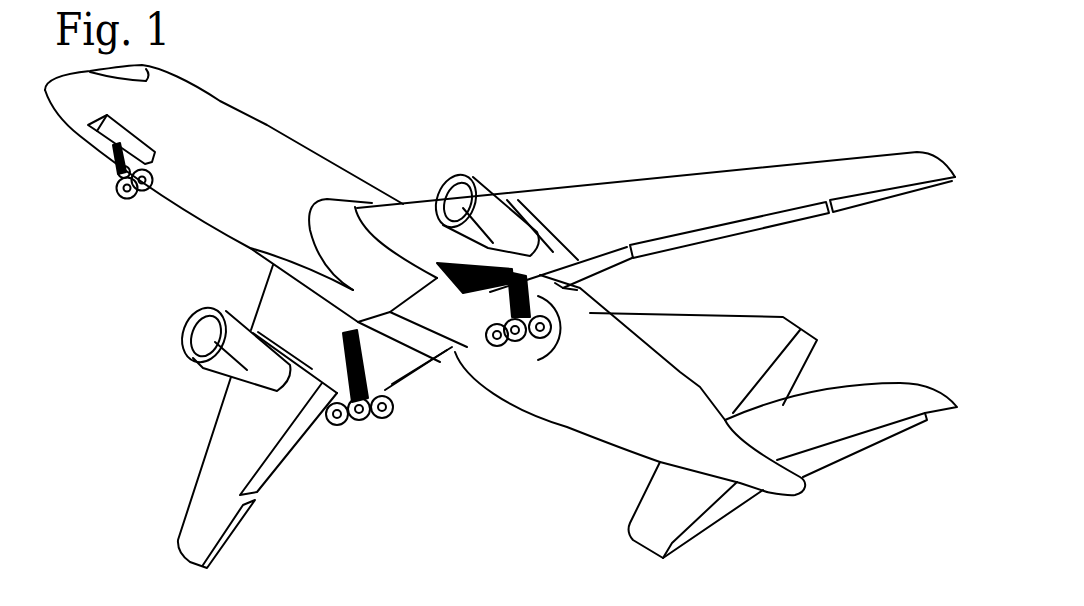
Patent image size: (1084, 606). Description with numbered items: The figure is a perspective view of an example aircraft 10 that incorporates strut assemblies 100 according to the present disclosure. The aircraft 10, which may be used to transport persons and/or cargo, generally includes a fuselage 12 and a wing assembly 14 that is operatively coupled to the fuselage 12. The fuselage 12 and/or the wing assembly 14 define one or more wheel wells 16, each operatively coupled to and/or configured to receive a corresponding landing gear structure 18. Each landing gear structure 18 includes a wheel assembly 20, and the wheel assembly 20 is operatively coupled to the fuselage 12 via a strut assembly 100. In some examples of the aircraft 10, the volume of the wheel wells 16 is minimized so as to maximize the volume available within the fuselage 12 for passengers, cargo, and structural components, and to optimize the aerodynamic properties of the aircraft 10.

The aircraft 10 is at (509, 111).
The fuselage 12 is at (263, 126).
The wing assembly 14 is at (664, 178).
The wheel well 16 is at (105, 149).
The landing gear structure 18 is at (127, 202).
The wheel assembly 20 is at (143, 195).
The strut assembly 100 is at (383, 355).